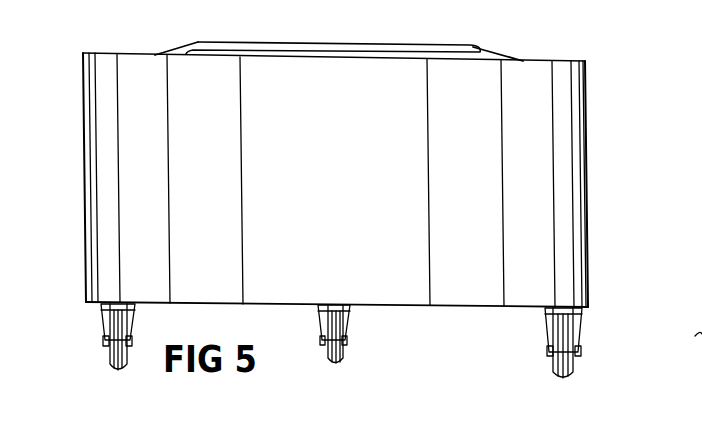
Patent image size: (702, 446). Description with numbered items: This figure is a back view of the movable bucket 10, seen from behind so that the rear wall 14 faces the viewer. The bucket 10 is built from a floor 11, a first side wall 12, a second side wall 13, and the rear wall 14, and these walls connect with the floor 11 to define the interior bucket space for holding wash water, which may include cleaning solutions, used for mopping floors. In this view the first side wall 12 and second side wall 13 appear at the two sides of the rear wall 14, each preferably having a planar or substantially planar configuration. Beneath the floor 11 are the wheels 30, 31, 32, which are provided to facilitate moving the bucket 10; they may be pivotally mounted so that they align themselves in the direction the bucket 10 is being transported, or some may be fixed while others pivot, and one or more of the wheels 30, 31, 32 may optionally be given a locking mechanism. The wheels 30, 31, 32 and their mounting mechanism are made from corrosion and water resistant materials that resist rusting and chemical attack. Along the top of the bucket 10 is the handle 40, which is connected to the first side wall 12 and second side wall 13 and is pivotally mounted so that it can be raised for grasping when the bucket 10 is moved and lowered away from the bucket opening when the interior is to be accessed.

The movable bucket 10 is at (370, 233).
The floor 11 is at (413, 310).
The first side wall 12 is at (589, 215).
The second side wall 13 is at (83, 207).
The rear wall 14 is at (355, 201).
The wheel 30 is at (345, 352).
The wheel 31 is at (552, 370).
The wheel 32 is at (130, 363).
The handle 40 is at (305, 43).